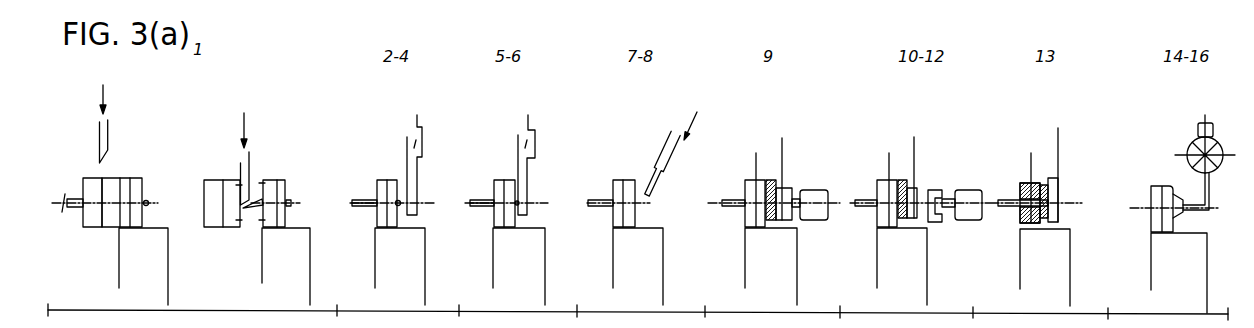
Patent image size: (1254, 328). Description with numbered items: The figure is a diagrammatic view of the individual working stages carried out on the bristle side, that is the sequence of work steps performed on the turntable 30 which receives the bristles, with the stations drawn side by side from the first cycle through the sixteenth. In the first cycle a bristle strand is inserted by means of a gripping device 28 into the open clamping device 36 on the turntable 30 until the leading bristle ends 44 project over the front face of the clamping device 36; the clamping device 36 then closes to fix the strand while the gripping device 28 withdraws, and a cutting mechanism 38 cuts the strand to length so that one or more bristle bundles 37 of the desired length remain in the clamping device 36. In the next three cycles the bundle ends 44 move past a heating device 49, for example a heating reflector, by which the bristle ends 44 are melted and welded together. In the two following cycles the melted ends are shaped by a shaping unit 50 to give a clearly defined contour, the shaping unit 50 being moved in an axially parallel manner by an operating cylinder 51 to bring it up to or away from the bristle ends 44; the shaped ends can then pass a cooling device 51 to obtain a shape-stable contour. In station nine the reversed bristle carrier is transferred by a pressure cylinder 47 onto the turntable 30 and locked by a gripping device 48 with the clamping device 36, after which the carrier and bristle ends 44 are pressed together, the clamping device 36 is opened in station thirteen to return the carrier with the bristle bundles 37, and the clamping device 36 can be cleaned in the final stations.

The gripping device 28 is at (90, 188).
The turntable 30 is at (128, 262).
The clamping device 36 is at (124, 178).
The bristle bundles 37 is at (362, 198).
The cutting mechanism 38 is at (98, 139).
The bristle ends 44 is at (148, 203).
The pressure cylinder 47 is at (814, 197).
The gripping device 48 is at (772, 163).
The heating device 49 is at (421, 150).
The shaping unit 50 is at (532, 150).
The operating cylinder 51 is at (664, 153).